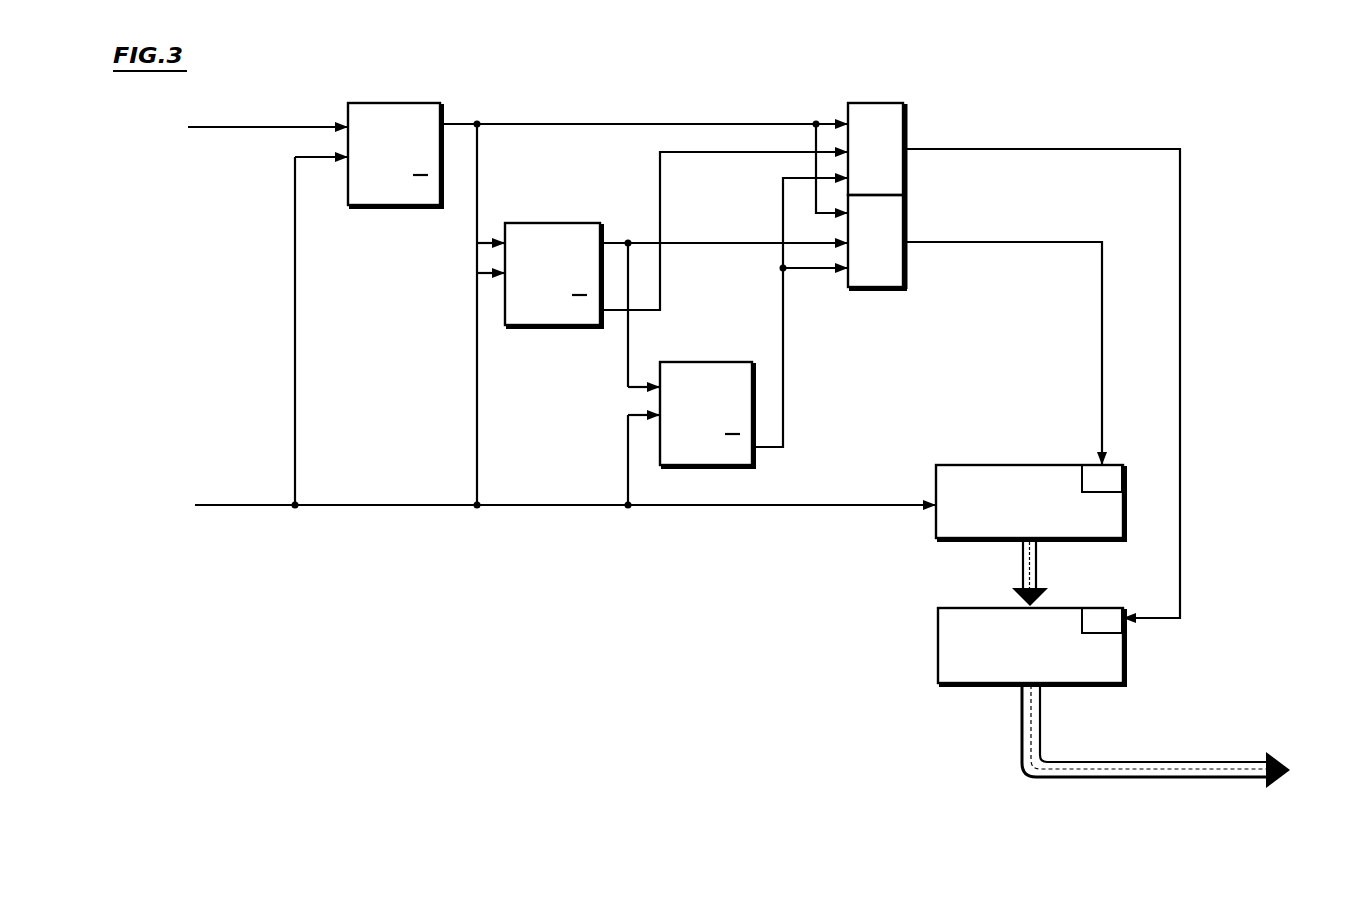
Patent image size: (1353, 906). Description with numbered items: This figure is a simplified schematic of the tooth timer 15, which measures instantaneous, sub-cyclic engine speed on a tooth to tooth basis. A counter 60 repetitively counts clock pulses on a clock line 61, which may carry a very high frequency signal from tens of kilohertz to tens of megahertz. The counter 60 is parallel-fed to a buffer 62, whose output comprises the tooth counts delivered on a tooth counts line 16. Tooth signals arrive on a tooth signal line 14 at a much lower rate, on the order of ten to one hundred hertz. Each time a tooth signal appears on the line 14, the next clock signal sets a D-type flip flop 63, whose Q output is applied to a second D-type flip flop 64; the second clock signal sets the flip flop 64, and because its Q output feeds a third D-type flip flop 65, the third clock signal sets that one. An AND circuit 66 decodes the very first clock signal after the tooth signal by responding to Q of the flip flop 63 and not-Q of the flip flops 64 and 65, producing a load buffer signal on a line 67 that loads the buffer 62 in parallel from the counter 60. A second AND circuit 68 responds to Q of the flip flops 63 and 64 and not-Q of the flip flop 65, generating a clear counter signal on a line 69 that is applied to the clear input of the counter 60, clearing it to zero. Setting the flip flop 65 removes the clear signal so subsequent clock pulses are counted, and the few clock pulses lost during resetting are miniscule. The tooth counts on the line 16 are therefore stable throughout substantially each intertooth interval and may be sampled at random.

The tooth signal line 14 is at (307, 125).
The tooth timer 15 is at (1062, 101).
The tooth counts line 16 is at (1178, 770).
The counter 60 is at (1003, 465).
The clock line 61 is at (805, 501).
The buffer 62 is at (937, 641).
The first D-type flip flop 63 is at (393, 103).
The second D-type flip flop 64 is at (550, 222).
The third D-type flip flop 65 is at (702, 362).
The first AND circuit 66 is at (875, 103).
The load buffer line 67 is at (1127, 147).
The second AND circuit 68 is at (880, 277).
The clear counter line 69 is at (1102, 331).